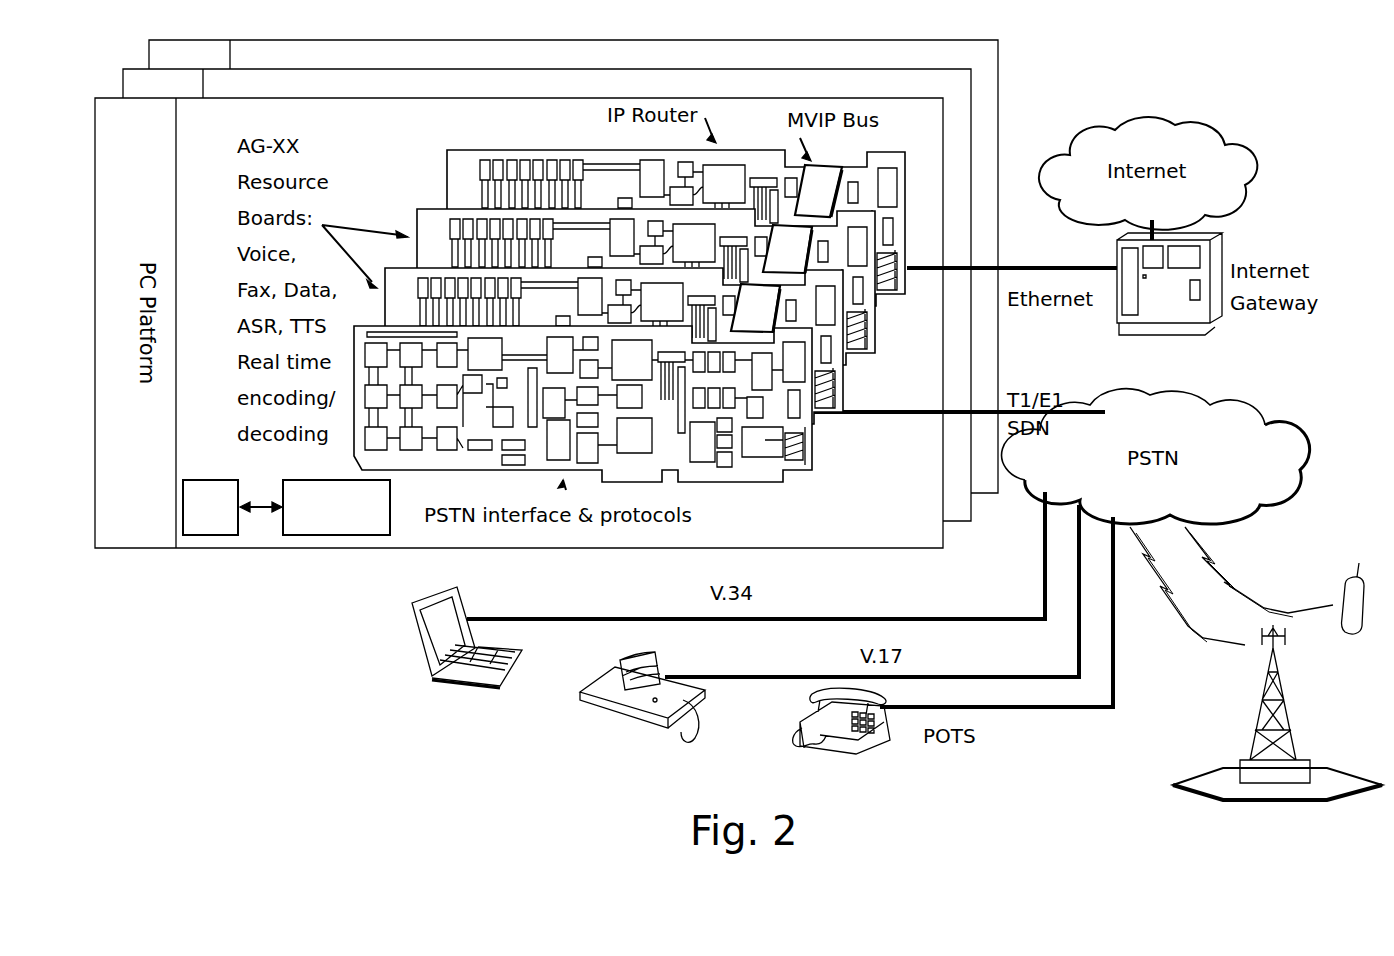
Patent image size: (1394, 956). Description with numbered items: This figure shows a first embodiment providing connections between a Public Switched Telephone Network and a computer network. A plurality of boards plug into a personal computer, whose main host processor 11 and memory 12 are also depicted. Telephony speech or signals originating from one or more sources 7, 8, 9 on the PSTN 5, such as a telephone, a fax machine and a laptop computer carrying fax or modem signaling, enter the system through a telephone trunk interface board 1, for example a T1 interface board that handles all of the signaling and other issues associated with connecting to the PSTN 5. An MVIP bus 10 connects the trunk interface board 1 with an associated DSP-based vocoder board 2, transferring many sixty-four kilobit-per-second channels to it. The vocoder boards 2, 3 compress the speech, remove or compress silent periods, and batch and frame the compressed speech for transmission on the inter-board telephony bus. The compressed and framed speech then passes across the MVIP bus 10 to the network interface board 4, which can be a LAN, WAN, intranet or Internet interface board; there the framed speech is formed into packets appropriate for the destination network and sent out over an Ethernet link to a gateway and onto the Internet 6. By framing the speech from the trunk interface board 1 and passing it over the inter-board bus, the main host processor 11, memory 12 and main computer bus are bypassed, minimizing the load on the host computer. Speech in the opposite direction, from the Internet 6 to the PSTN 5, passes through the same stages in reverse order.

The telephone trunk interface board 1 is at (378, 324).
The vocoder board 2 is at (394, 267).
The vocoder board 3 is at (433, 209).
The network interface board 4 is at (460, 150).
The PSTN 5 is at (1307, 455).
The Internet 6 is at (1258, 177).
The source 7 is at (870, 744).
The source 8 is at (612, 700).
The source 9 is at (420, 645).
The MVIP bus 10 is at (827, 165).
The main host processor 11 is at (212, 480).
The memory 12 is at (387, 493).